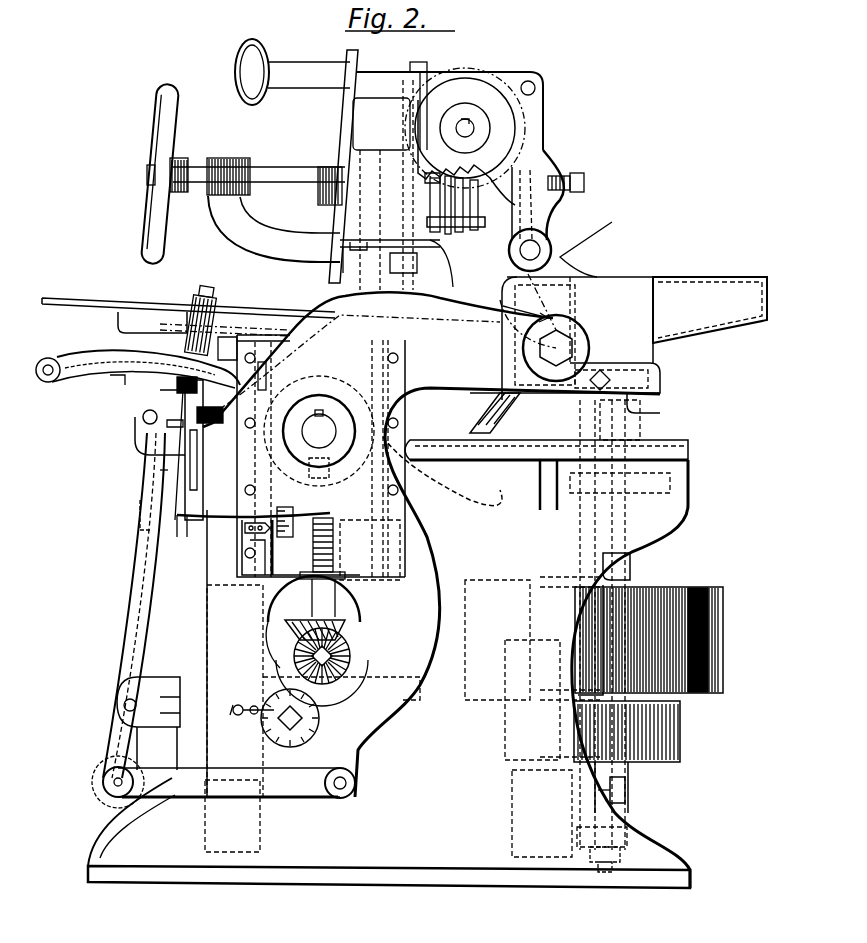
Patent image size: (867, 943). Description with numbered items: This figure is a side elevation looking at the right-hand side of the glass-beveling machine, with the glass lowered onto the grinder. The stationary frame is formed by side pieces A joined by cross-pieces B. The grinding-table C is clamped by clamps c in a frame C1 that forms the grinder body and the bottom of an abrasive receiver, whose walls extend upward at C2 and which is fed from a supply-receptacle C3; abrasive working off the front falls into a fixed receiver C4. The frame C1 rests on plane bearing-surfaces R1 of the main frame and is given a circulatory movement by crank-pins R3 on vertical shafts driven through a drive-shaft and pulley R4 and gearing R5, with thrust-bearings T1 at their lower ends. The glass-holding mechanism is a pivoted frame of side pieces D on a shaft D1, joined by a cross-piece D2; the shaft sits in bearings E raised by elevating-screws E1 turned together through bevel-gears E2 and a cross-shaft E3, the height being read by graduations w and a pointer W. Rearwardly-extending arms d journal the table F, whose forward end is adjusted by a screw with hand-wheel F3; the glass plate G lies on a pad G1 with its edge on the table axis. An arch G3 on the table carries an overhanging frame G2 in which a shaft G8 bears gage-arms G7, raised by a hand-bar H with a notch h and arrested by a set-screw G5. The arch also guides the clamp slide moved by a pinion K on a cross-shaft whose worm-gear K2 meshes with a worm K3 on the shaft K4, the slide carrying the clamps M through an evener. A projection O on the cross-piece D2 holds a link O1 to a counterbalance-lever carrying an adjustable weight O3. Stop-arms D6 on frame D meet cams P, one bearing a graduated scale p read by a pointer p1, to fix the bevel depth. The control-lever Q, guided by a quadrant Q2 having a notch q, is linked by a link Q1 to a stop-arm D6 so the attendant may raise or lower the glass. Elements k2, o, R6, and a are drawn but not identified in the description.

The side pieces A is at (389, 590).
The cross-pieces B is at (213, 813).
The grinding-table C is at (590, 355).
The frame C1 is at (658, 383).
The upwardly-extended walls C2 is at (598, 278).
The supply-receptacle C3 is at (710, 310).
The fixed receiver C4 is at (455, 505).
The clamps c is at (607, 380).
The side pieces D is at (311, 434).
The shaft D1 is at (319, 431).
The cross-piece D2 is at (180, 457).
The stop-arms D6 is at (334, 664).
The bearings E is at (300, 530).
The elevating-screws E1 is at (327, 567).
The bevel-gears E2 is at (370, 640).
The cross-shaft E3 is at (290, 650).
The table F is at (190, 330).
The hand-wheel F3 is at (266, 378).
The glass plate G is at (55, 299).
The pad G1 is at (128, 312).
The overhanging frame G2 is at (535, 165).
The arch G3 is at (352, 170).
The set-screw G5 is at (580, 184).
The gage-arms G7 is at (605, 236).
The shaft G8 is at (534, 246).
The hand-bar H is at (323, 62).
The notch h is at (352, 95).
The pinion K is at (474, 130).
The worm-gear K2 is at (467, 85).
The worm K3 is at (460, 214).
The shaft K4 is at (298, 180).
The pin k2 is at (112, 385).
The clamps M is at (400, 326).
The projection O is at (143, 418).
The link O1 is at (145, 505).
The adjustable weight O3 is at (136, 742).
The pin o is at (170, 480).
The cams P is at (265, 733).
The graduated scale p is at (322, 712).
The pointer p1 is at (252, 699).
The control-lever Q is at (138, 603).
The link Q1 is at (145, 787).
The quadrant Q2 is at (80, 357).
The notch q is at (78, 424).
The plane bearing-surfaces R1 is at (683, 456).
The crank-pins R3 is at (660, 478).
The drive-shaft and pulley R4 is at (725, 632).
The gearing R5 is at (632, 580).
The bracket R6 is at (620, 843).
The ball-bearing thrust-bearings T1 is at (630, 783).
The pointer W is at (245, 528).
The graduations w is at (270, 545).
The arrow a is at (525, 307).
The rearwardly-extending arms d is at (512, 330).